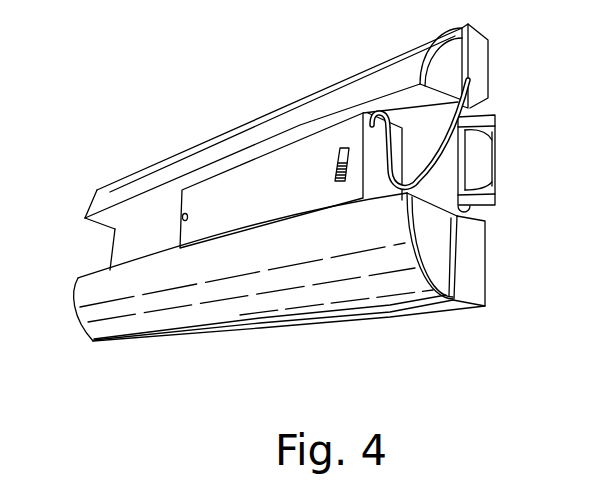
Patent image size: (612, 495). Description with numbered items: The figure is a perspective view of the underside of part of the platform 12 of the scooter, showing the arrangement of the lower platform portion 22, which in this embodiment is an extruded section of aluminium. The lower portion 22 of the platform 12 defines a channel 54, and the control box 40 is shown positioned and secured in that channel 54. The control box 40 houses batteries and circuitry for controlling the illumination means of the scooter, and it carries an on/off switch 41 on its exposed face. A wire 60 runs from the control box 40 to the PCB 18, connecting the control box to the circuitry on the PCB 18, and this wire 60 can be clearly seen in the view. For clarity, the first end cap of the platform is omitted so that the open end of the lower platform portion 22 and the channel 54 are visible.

The platform 12 is at (328, 295).
The PCB 18 is at (478, 54).
The lower platform portion 22 is at (414, 290).
The control box 40 is at (228, 182).
The on/off switch 41 is at (332, 170).
The channel 54 is at (153, 250).
The wire 60 is at (480, 96).